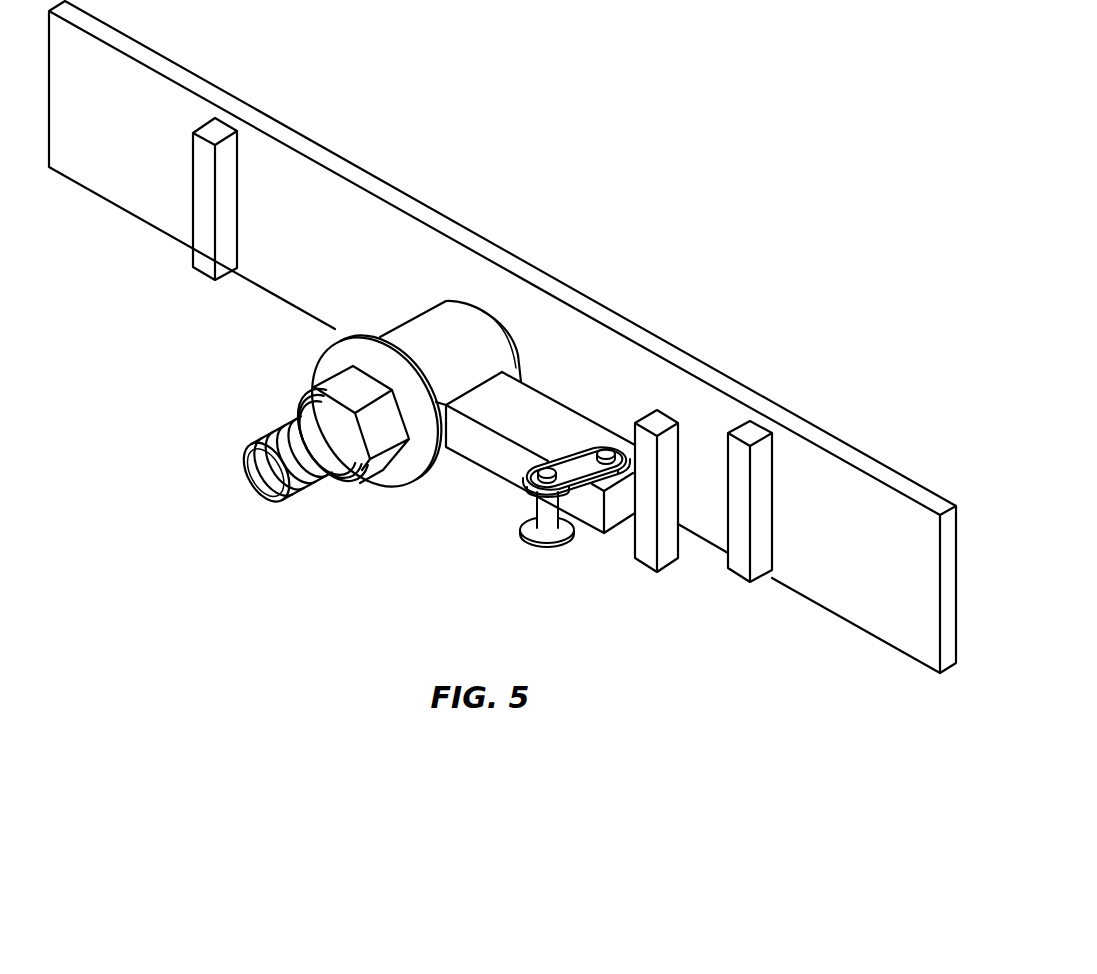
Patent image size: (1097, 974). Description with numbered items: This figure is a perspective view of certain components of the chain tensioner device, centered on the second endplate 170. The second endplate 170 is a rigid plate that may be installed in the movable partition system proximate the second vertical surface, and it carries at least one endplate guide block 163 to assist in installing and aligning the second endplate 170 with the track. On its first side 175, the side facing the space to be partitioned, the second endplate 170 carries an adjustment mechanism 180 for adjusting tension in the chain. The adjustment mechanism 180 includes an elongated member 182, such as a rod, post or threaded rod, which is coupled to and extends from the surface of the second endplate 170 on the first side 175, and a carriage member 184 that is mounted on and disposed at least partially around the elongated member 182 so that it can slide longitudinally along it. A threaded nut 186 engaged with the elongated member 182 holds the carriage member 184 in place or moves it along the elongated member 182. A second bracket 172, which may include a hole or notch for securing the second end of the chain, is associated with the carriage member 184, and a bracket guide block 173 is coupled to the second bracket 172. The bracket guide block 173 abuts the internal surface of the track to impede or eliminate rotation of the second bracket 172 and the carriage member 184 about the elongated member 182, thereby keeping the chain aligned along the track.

The second endplate 170 is at (362, 176).
The endplate guide block 163 is at (205, 256).
The bracket guide block 173 is at (648, 548).
The second bracket 172 is at (498, 454).
The first side 175 is at (387, 292).
The carriage member 184 is at (447, 333).
The adjustment mechanism 180 is at (388, 510).
The threaded nut 186 is at (343, 387).
The elongated member 182 is at (263, 470).